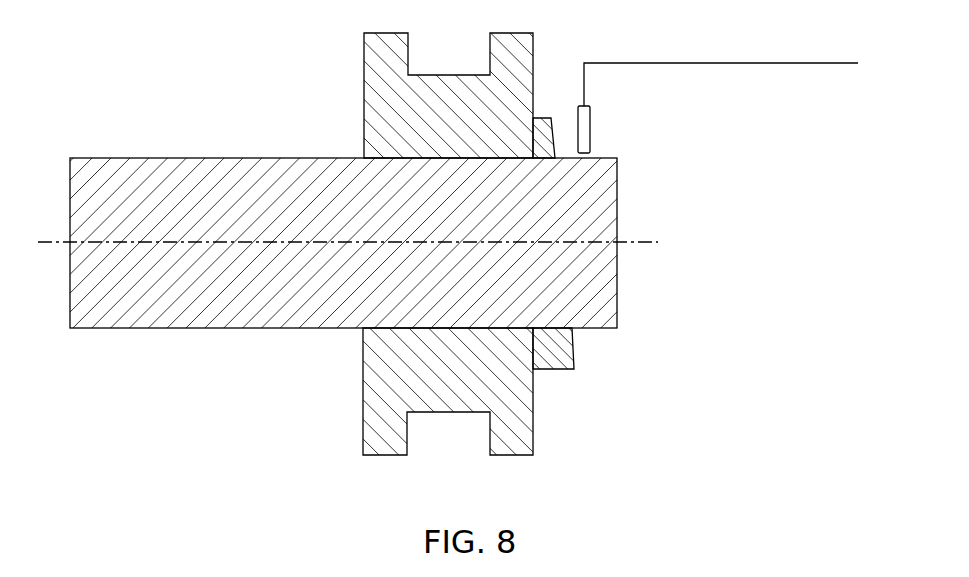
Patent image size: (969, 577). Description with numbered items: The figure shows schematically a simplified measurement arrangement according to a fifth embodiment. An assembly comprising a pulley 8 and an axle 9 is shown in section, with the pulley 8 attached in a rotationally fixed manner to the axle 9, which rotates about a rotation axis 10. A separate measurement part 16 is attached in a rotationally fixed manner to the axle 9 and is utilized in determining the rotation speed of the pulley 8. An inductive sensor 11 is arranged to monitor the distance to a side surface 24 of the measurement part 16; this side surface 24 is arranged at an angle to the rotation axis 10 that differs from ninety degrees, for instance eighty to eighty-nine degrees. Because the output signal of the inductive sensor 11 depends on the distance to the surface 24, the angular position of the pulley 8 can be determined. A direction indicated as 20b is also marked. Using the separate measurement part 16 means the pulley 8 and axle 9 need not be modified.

The pulley 8 is at (372, 82).
The axle 9 is at (617, 297).
The rotation axis 10 is at (632, 240).
The inductive sensor 11 is at (592, 118).
The measurement part 16 is at (543, 125).
The side surface 24 is at (575, 355).
The direction arrow 20b is at (718, 352).